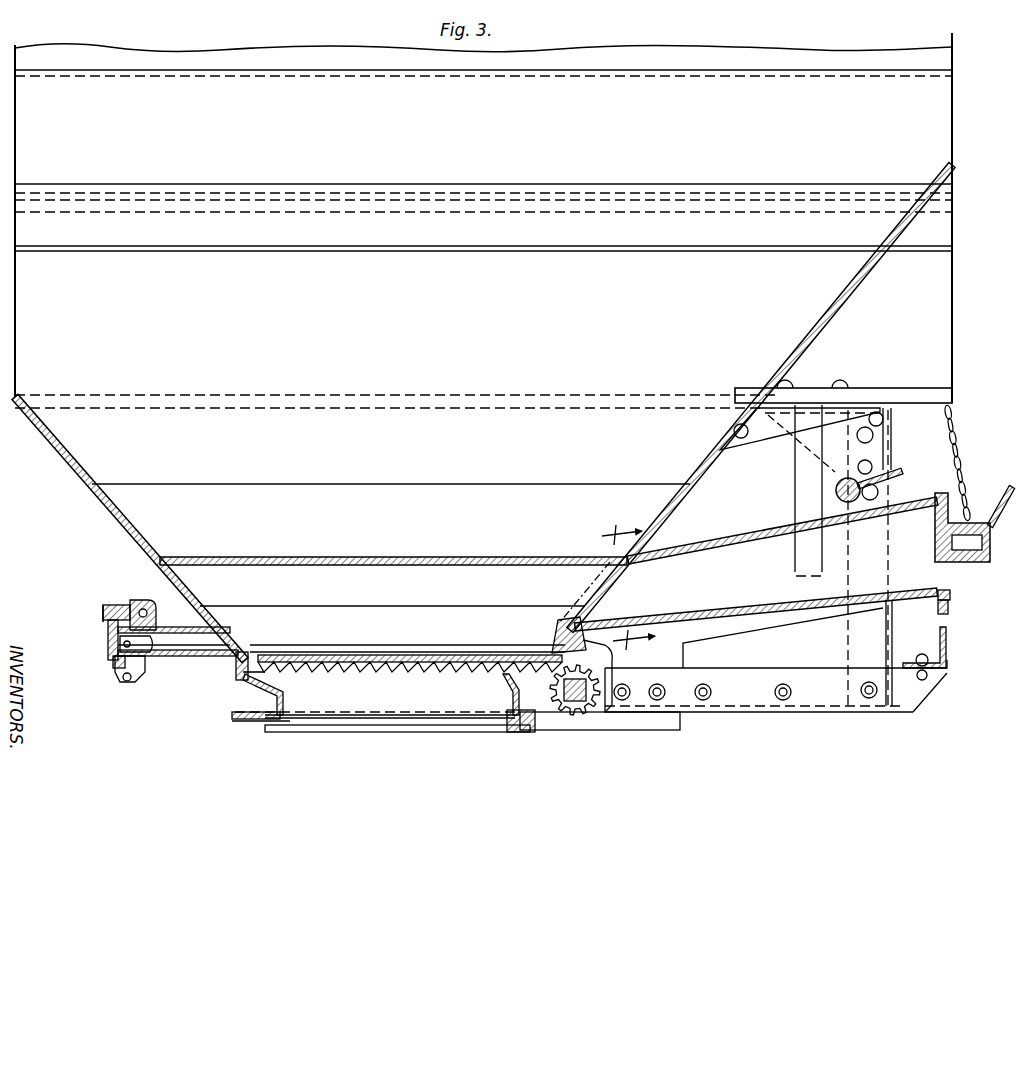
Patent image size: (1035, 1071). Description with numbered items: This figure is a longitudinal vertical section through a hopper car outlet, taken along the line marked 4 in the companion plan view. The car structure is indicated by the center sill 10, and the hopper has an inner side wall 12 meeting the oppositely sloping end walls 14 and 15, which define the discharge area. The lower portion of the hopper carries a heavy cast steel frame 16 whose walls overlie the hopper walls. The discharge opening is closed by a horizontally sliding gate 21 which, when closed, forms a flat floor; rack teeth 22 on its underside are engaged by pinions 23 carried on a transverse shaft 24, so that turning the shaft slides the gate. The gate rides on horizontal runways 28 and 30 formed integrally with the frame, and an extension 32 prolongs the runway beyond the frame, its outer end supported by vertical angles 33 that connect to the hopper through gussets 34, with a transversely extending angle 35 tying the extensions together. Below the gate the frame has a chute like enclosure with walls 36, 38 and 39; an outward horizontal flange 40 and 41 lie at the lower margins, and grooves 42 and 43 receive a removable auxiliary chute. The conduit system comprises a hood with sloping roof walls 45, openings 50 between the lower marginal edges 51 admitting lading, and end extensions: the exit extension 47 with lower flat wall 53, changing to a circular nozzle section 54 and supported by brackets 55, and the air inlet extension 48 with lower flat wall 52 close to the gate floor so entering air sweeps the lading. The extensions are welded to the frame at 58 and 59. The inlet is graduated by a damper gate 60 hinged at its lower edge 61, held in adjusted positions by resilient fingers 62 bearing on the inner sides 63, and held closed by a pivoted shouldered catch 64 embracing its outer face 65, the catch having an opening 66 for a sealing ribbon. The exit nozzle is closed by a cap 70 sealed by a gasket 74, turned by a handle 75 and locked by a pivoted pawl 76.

The section line 4- 4 is at (628, 585).
The center sill 10 is at (925, 388).
The inner side wall 12 is at (420, 443).
The end wall 14 is at (700, 449).
The end wall 15 is at (65, 455).
The frame 16 is at (236, 724).
The horizontally sliding gate 21 is at (332, 656).
The rack teeth 22 is at (386, 673).
The pinions 23 is at (592, 700).
The shaft 24 is at (578, 702).
The runway 28 is at (243, 686).
The runway 30 is at (766, 432).
The extension 32 is at (784, 668).
The vertical angles 33 is at (893, 612).
The gussets 34 is at (800, 447).
The transversely extending angle 35 is at (948, 652).
The chute wall 36 is at (268, 688).
The chute wall 38 is at (505, 690).
The chute wall 39 is at (308, 706).
The horizontal flange 40 is at (232, 715).
The horizontal flange 41 is at (418, 556).
The groove 42 is at (518, 724).
The groove 43 is at (402, 725).
The sloping walls 45 is at (496, 578).
The conduit extension 47 is at (745, 520).
The conduit extension 48 is at (185, 660).
The openings 50 is at (420, 650).
The lower marginal edges 51 is at (462, 650).
The lower flat wall 52 is at (160, 663).
The lower flat wall 53 is at (696, 612).
The circularly shaped nozzle section 54 is at (949, 606).
The brackets 55 is at (796, 488).
The weld 58 is at (562, 622).
The weld 59 is at (244, 654).
The damper gate 60 is at (90, 615).
The hinge 61 is at (125, 683).
The resilient lugs or fingers 62 is at (113, 660).
The inner sides 63 is at (172, 634).
The pivoted shouldered catch 64 is at (110, 604).
The outer face 65 is at (108, 628).
The opening 66 is at (141, 603).
The cap 70 is at (952, 598).
The gasket 74 is at (946, 500).
The turning handle 75 is at (1005, 486).
The pivoted pawl 76 is at (898, 482).